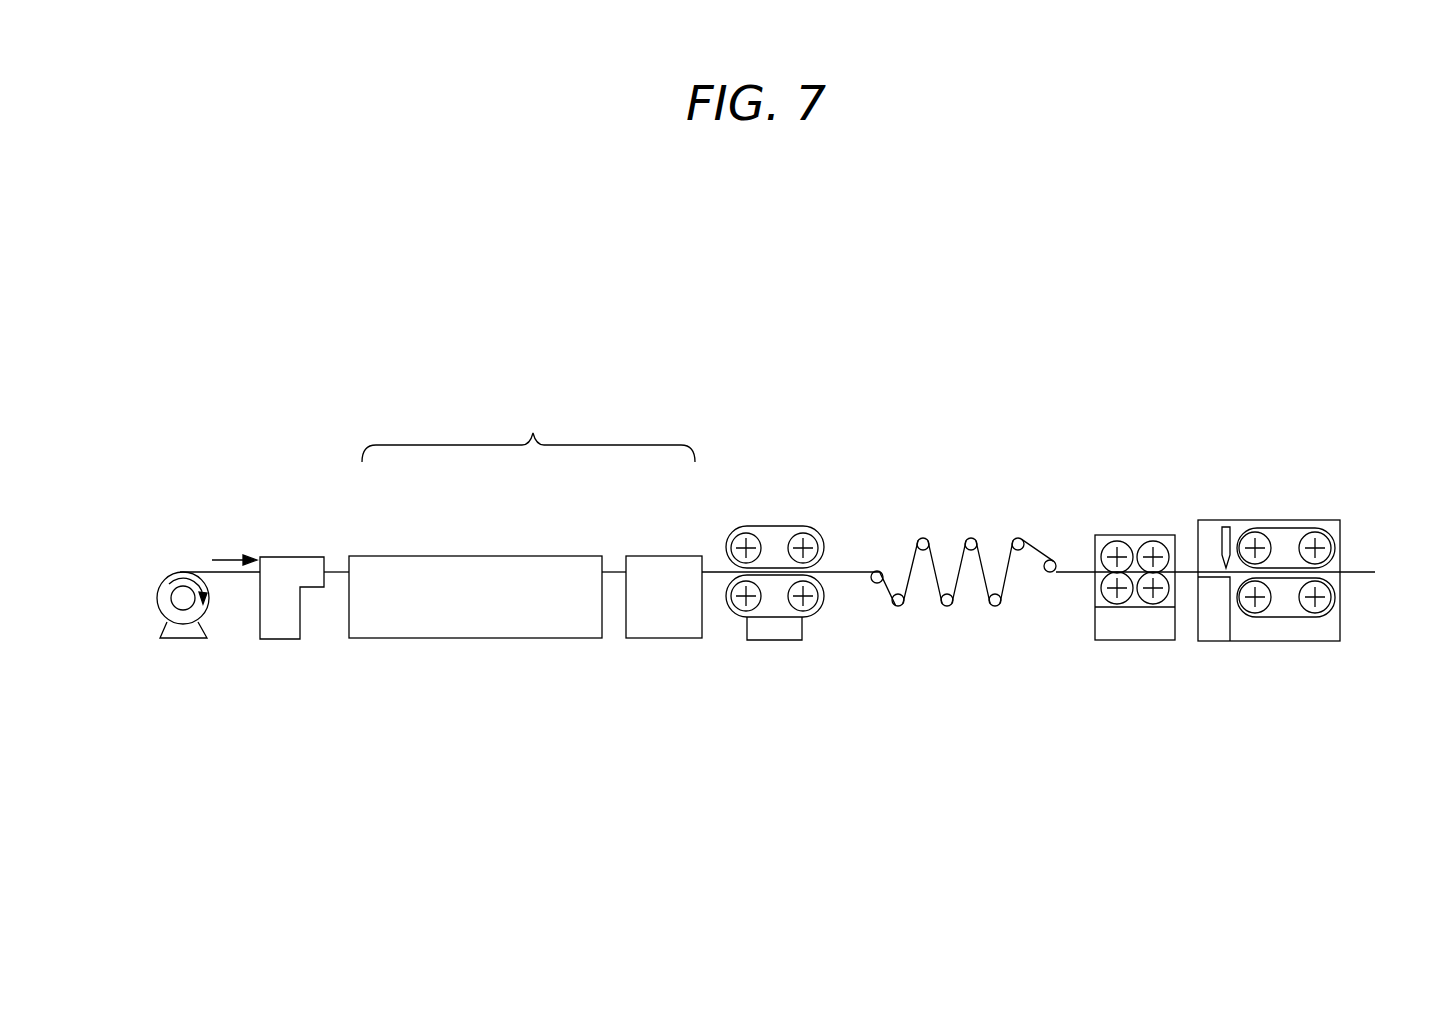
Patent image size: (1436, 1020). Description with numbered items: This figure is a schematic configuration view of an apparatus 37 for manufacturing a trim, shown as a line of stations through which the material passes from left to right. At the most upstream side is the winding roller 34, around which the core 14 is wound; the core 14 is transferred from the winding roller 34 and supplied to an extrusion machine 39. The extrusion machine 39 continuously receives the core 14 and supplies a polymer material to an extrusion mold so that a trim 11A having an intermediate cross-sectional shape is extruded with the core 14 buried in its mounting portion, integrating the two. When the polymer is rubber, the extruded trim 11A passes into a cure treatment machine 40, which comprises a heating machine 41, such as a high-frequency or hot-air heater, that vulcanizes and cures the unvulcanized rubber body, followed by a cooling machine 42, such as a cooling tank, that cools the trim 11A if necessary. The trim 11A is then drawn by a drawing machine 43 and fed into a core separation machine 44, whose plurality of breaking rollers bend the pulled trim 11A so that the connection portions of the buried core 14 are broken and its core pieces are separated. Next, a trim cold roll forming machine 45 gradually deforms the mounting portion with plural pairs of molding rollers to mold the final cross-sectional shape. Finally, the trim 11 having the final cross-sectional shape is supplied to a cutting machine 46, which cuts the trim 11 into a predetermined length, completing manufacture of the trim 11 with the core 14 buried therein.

The apparatus for manufacturing a trim 37 is at (721, 387).
The core 14 is at (202, 570).
The winding roller 34 is at (177, 580).
The extrusion machine 39 is at (297, 557).
The trim having an intermediate cross sectional shape 11A is at (338, 570).
The cure treatment machine 40 is at (525, 520).
The heating machine 41 is at (475, 556).
The cooling machine 42 is at (662, 556).
The drawing machine 43 is at (770, 526).
The core separation machine 44 is at (970, 527).
The trim cold roll forming machine 45 is at (1132, 535).
The cutting machine 46 is at (1277, 520).
The trim 11 is at (1357, 572).